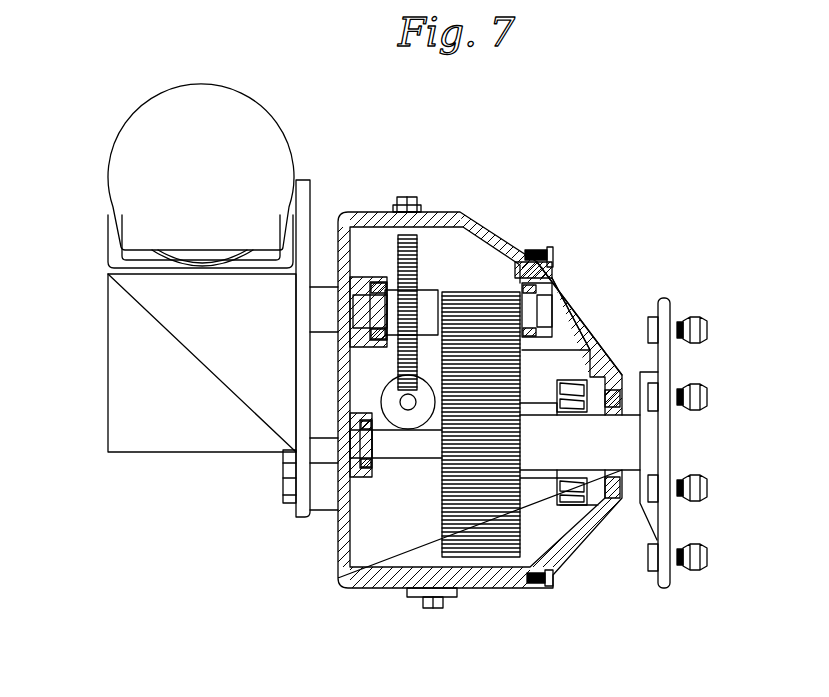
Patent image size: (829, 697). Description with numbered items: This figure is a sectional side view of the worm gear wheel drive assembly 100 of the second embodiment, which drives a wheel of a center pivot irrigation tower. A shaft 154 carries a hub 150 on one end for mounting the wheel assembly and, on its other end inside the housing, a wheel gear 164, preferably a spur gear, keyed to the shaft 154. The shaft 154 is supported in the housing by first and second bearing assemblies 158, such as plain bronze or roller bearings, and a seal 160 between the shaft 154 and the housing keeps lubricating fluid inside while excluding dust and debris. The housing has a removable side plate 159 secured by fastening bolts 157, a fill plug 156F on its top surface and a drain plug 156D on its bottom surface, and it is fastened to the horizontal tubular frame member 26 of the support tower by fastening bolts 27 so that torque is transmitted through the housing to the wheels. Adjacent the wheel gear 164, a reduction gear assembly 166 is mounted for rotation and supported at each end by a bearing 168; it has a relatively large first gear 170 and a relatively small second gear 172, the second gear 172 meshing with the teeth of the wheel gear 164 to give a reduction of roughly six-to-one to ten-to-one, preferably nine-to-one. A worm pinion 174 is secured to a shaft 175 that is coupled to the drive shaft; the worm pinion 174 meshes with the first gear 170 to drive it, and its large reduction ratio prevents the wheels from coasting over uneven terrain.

The tubular frame member 26 is at (123, 158).
The fastening bolts 27 is at (292, 493).
The worm gear wheel drive assembly 100 is at (477, 393).
The hub 150 is at (677, 365).
The shaft 154 is at (613, 437).
The drain plug 156D is at (440, 612).
The fill plug 156F is at (416, 197).
The fastening bolts 157 is at (550, 252).
The bearing assemblies 158 is at (350, 560).
The removable side plate 159 is at (577, 323).
The seal 160 is at (610, 507).
The wheel gear 164 is at (443, 540).
The reduction gear assembly 166 is at (415, 282).
The bearing 168 is at (372, 308).
The first gear 170 is at (413, 262).
The second gear 172 is at (487, 307).
The worm pinion 174 is at (390, 405).
The shaft 175 is at (408, 447).